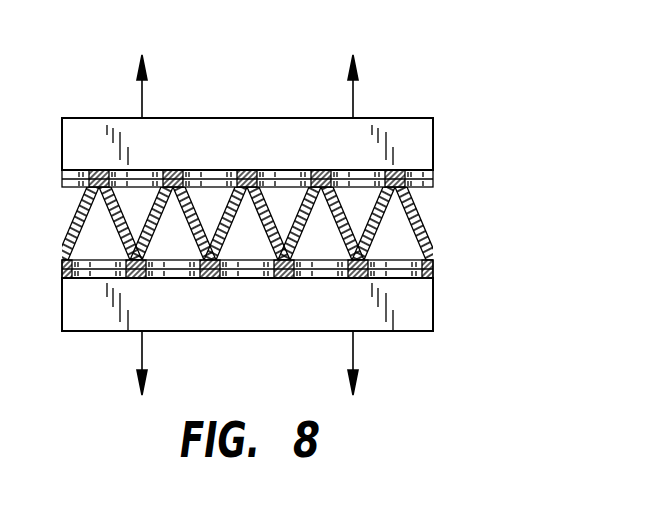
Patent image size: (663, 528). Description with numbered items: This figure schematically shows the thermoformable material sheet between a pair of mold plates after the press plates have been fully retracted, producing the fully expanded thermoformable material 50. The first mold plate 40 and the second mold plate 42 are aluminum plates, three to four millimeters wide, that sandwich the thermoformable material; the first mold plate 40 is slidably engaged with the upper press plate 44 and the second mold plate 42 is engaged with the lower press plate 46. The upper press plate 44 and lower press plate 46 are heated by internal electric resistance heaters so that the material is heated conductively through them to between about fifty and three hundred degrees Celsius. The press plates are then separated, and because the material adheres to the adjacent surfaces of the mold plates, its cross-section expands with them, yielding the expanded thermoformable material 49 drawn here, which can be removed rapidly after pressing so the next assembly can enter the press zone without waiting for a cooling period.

The first mold plate 40 is at (173, 178).
The second mold plate 42 is at (210, 280).
The upper press plate 44 is at (409, 118).
The lower press plate 46 is at (418, 331).
The expanded thermoformable material 49 is at (417, 220).
The fully expanded thermoformable material 50 is at (319, 229).